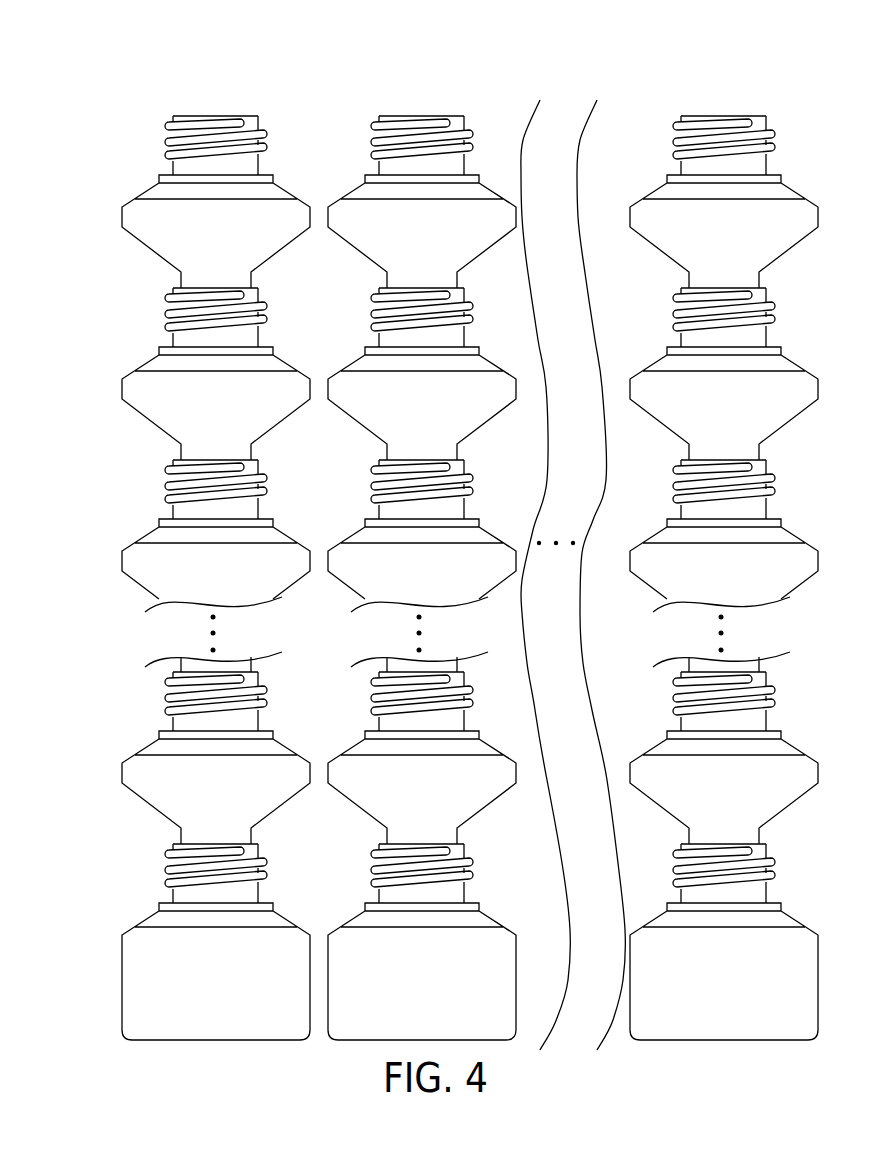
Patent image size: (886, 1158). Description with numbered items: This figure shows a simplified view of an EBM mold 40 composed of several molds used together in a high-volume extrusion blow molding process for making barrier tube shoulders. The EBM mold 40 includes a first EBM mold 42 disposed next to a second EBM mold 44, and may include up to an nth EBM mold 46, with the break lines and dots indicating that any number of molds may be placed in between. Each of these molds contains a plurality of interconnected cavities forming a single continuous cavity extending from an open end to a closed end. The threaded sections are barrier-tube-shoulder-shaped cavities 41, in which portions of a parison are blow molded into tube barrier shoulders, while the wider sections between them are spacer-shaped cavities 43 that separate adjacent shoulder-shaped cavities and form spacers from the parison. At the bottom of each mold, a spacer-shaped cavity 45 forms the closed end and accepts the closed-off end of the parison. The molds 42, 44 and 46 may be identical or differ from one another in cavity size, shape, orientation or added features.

The EBM mold 40 is at (97, 102).
The barrier-tube-shoulder-shaped cavity 41 is at (114, 228).
The first EBM mold 42 is at (122, 98).
The spacer-shaped cavity 43 is at (114, 288).
The second EBM mold 44 is at (328, 98).
The spacer-shaped cavity 45 is at (114, 1040).
The nth EBM mold 46 is at (630, 98).